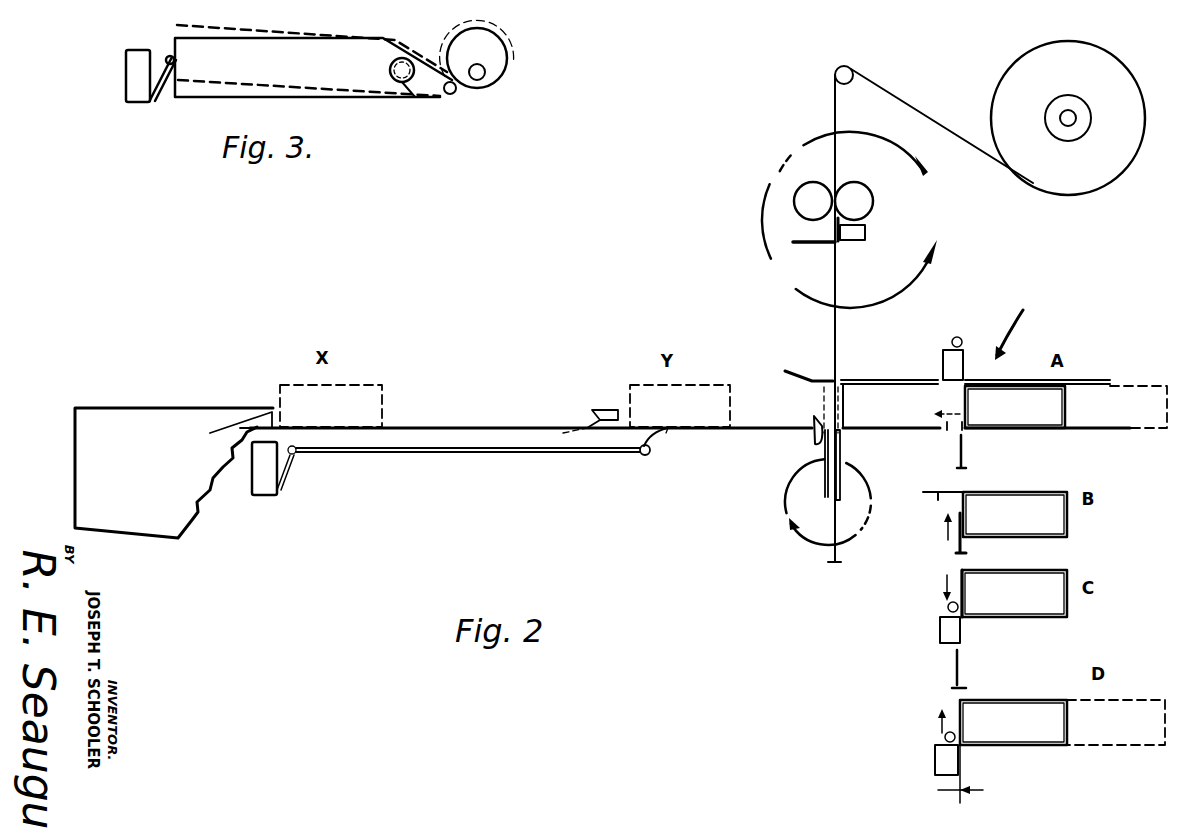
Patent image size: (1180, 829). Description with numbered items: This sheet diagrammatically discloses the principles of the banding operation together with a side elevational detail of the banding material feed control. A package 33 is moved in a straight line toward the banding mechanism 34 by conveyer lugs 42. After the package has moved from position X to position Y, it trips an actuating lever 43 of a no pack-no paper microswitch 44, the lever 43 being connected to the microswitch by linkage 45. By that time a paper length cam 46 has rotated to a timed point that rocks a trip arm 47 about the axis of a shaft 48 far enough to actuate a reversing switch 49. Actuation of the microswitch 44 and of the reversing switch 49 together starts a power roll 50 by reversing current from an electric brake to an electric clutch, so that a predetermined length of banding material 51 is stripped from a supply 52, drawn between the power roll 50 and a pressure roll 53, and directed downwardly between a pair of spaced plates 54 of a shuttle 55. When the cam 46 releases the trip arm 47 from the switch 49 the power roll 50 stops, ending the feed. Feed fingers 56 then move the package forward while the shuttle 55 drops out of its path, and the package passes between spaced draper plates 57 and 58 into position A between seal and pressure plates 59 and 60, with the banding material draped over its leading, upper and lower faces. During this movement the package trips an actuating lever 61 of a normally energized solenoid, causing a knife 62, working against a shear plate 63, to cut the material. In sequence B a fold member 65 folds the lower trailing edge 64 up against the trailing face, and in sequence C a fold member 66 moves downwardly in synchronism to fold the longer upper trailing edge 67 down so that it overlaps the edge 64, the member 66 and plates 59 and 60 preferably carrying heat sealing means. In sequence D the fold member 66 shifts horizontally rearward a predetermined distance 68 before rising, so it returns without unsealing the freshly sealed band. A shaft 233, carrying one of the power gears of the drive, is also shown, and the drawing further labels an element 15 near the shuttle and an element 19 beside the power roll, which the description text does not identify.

In FIG. 2, the rotary cutter 15 is at (821, 502).
In FIG. 2, the drum 19 is at (852, 220).
In FIG. 2, the package 33 is at (382, 385).
In FIG. 2, the banding mechanism 34 is at (1027, 306).
In FIG. 2, the conveyer lugs 42 is at (270, 410).
In FIG. 2, the actuating lever 43 is at (652, 448).
In FIG. 2, the microswitch 44 is at (258, 482).
In FIG. 2, the linkage 45 is at (487, 450).
In FIG. 3, the paper length cam 46 is at (492, 50).
In FIG. 3, the trip arm 47 is at (368, 95).
In FIG. 3, the shaft 48 is at (420, 94).
In FIG. 3, the reversing switch 49 is at (137, 102).
In FIG. 2, the power roll 50 is at (800, 208).
In FIG. 2, the banding material 51 is at (838, 340).
In FIG. 2, the supply 52 is at (1132, 150).
In FIG. 2, the pressure roll 53 is at (866, 204).
In FIG. 2, the spaced plates 54 is at (843, 458).
In FIG. 2, the shuttle 55 is at (815, 451).
In FIG. 2, the feed fingers 56 is at (619, 408).
In FIG. 2, the draper plate 57 is at (893, 382).
In FIG. 2, the draper plate 58 is at (905, 427).
In FIG. 2, the seal and pressure plate 59 is at (1020, 382).
In FIG. 2, the seal and pressure plate 60 is at (1057, 432).
In FIG. 2, the actuating lever 61 is at (808, 430).
In FIG. 2, the knife 62 is at (806, 250).
In FIG. 2, the shear plate 63 is at (859, 239).
In FIG. 2, the lower trailing edge 64 is at (949, 433).
In FIG. 2, the fold member 65 is at (967, 449).
In FIG. 2, the fold member 66 is at (965, 352).
In FIG. 2, the upper trailing edge 67 is at (950, 385).
In FIG. 2, the predetermined distance 68 is at (968, 787).
In FIG. 3, the shaft 233 is at (485, 78).